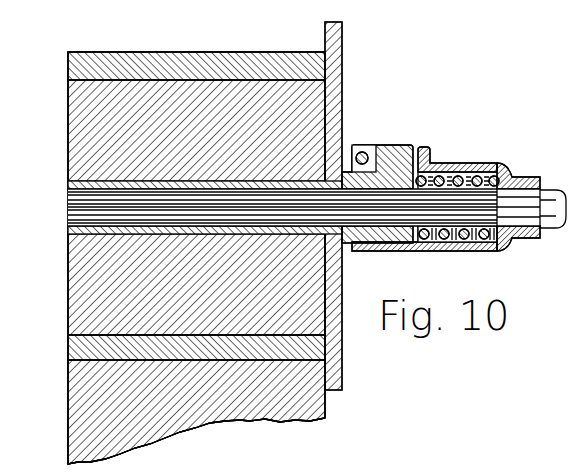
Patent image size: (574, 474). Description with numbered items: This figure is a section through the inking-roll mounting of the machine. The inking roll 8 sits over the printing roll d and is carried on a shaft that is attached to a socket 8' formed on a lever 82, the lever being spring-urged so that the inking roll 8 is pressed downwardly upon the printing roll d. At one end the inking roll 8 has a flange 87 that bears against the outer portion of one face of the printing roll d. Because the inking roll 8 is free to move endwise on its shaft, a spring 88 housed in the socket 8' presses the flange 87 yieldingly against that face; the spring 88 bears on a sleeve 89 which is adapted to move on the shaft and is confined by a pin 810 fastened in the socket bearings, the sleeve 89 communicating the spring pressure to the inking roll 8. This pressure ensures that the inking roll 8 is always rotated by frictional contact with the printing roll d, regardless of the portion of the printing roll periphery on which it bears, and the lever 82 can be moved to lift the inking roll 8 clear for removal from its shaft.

The inking roll 8 is at (196, 247).
The flange 87 is at (342, 37).
The sleeve 89 is at (367, 178).
The pin 810 is at (364, 152).
The spring 88 is at (463, 163).
The socket 8' is at (514, 193).
The lever 82 is at (68, 210).
The printing roll d is at (291, 407).